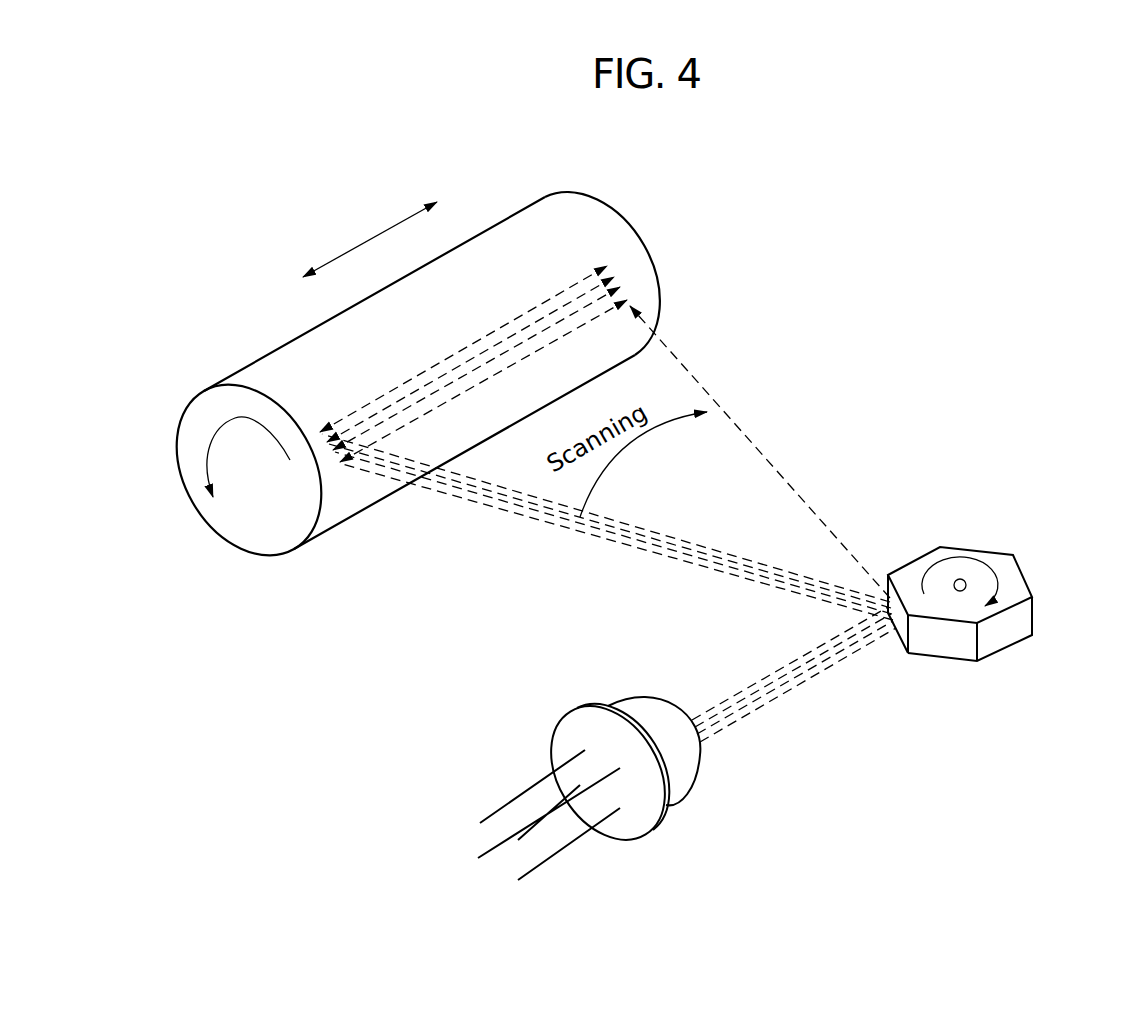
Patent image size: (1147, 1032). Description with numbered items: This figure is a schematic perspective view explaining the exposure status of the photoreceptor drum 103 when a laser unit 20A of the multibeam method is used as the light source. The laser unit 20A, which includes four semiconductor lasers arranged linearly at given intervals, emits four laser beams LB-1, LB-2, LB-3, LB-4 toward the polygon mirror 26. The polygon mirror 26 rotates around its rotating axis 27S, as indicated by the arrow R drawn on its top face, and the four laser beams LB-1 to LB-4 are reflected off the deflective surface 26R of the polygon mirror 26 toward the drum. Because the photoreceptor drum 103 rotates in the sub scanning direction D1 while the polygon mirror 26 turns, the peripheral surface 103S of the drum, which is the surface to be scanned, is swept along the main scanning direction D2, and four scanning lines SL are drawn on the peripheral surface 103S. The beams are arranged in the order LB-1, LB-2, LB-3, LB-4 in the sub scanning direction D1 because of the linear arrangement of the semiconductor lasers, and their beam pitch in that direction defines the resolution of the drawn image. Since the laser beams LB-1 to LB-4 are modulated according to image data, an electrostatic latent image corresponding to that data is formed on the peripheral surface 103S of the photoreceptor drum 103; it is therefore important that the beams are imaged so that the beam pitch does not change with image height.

The photoreceptor drum 103 is at (403, 407).
The peripheral surface 103S is at (350, 500).
The laser unit 20A is at (685, 797).
The polygon mirror 26 is at (967, 633).
The deflective surface 26R is at (897, 642).
The rotating axis 27S is at (958, 578).
The laser beam LB-1 is at (705, 712).
The laser beam LB-2 is at (770, 678).
The laser beam LB-3 is at (795, 688).
The laser beam LB-4 is at (738, 728).
The scanning lines SL is at (520, 367).
The sub scanning direction D1 is at (218, 420).
The main scanning direction D2 is at (367, 238).
The rotation direction of polygon mirror R is at (990, 565).